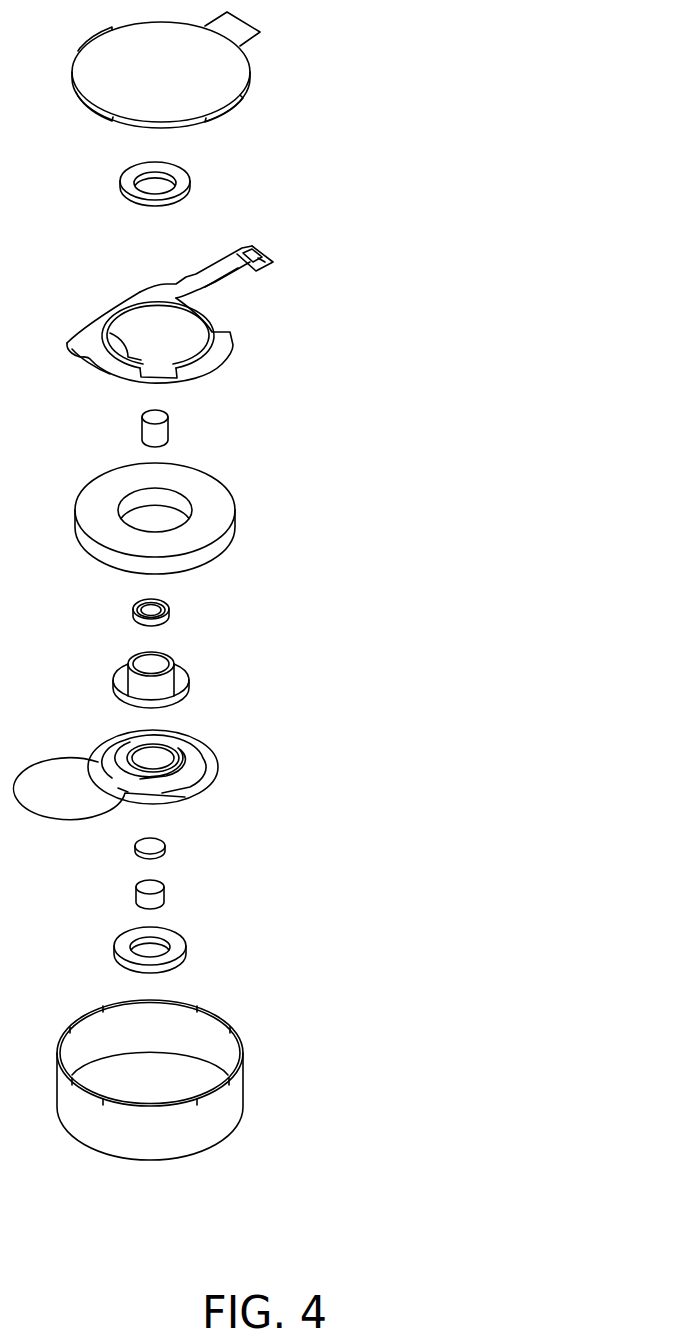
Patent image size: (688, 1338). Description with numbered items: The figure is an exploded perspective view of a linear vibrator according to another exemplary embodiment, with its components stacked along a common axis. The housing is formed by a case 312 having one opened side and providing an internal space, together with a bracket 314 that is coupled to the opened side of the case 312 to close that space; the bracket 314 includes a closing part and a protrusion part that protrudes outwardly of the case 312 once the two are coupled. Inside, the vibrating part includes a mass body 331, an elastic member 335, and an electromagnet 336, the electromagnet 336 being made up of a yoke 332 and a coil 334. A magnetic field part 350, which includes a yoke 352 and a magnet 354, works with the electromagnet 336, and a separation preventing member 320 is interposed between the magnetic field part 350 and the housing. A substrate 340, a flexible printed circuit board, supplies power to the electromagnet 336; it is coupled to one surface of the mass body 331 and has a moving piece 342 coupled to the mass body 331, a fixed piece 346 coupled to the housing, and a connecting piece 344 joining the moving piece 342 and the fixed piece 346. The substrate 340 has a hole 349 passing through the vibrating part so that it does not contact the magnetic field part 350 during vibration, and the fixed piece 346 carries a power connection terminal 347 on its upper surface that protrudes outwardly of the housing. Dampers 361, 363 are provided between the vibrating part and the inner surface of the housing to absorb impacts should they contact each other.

The case 312 is at (230, 1107).
The bracket 314 is at (282, 71).
The separation preventing member 320 is at (167, 437).
The mass body 331 is at (217, 510).
The yoke 332 is at (187, 678).
The coil 334 is at (170, 608).
The elastic member 335 is at (215, 770).
The electromagnet 336 is at (238, 649).
The substrate 340 is at (253, 307).
The moving piece 342 is at (212, 357).
The connecting piece 344 is at (148, 286).
The fixed piece 346 is at (233, 272).
The power connection terminal 347 is at (297, 249).
The hole 349 is at (108, 336).
The magnetic field part 350 is at (278, 871).
The yoke 352 is at (165, 848).
The magnet 354 is at (163, 888).
The damper 361 is at (183, 181).
The damper 363 is at (170, 953).